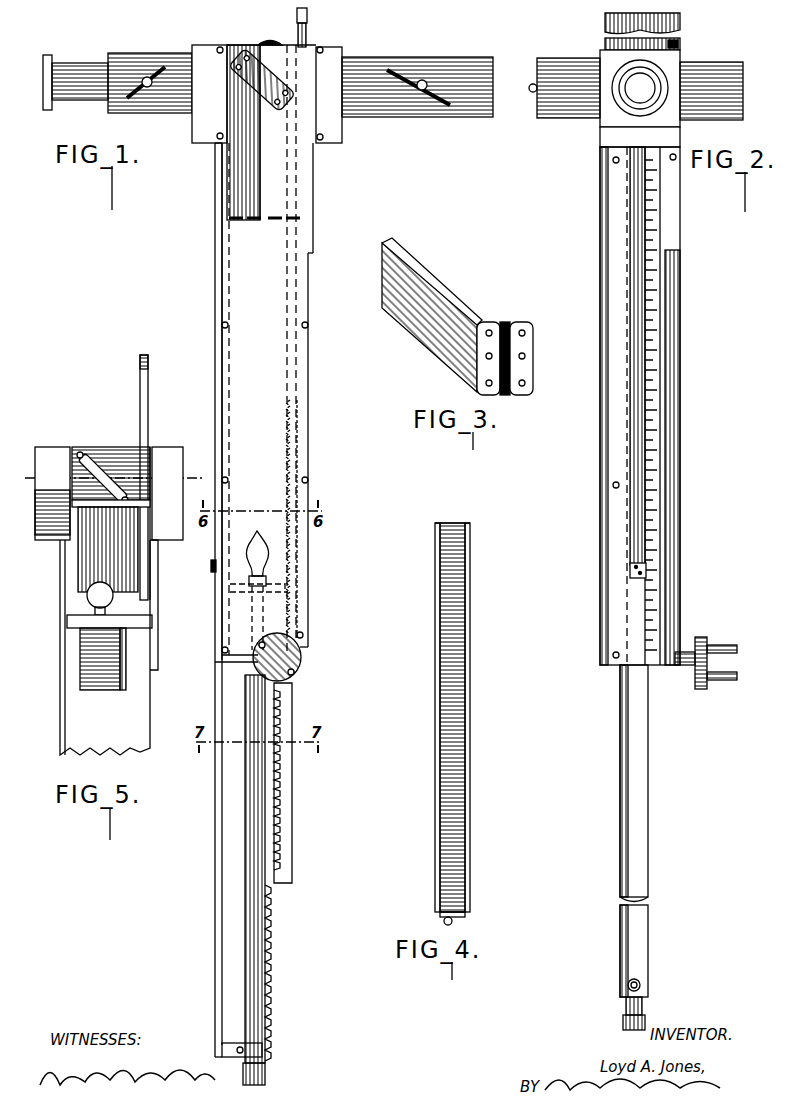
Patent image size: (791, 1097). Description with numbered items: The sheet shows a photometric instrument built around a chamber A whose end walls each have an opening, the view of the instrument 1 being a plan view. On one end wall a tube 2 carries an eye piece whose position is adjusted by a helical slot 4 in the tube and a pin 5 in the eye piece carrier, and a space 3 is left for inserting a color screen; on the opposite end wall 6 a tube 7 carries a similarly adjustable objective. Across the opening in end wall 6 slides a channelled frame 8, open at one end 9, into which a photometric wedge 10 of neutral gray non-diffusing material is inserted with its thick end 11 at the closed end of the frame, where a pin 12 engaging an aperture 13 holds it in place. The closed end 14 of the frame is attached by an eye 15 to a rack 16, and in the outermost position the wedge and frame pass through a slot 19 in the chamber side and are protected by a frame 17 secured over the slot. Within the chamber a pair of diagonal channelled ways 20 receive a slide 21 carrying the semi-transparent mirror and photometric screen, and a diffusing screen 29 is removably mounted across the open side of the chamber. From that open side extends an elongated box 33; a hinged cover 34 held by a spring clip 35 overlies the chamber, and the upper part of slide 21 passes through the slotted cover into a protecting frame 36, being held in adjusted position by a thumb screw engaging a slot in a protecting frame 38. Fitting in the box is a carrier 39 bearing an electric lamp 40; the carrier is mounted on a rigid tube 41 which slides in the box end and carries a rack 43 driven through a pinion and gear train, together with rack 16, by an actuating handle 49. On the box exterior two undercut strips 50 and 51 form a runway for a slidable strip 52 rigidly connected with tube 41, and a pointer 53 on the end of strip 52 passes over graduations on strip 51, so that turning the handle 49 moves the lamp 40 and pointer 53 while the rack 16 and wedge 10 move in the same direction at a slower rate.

In FIG. 2, the housing 1 is at (612, 62).
In FIG. 1, the tube 2 is at (116, 62).
In FIG. 1, the space for color screen 3 is at (196, 45).
In FIG. 1, the helical slot 4 is at (157, 72).
In FIG. 1, the pin 5 is at (147, 88).
In FIG. 1, the end wall 6 is at (342, 48).
In FIG. 1, the tube 7 is at (414, 62).
In FIG. 4, the channelled frame 8 is at (436, 710).
In FIG. 5, the channelled frame 8 is at (148, 437).
In FIG. 4, the open end of frame 9 is at (468, 530).
In FIG. 1, the photometric wedge 10 is at (300, 78).
In FIG. 4, the photometric wedge 10 is at (452, 693).
In FIG. 4, the thick end of wedge 11 is at (466, 905).
In FIG. 4, the pin 12 is at (445, 525).
In FIG. 5, the aperture 13 is at (148, 358).
In FIG. 4, the closed end of frame 14 is at (458, 917).
In FIG. 4, the eye 15 is at (444, 921).
In FIG. 1, the rack 16 is at (298, 443).
In FIG. 1, the protective frame 17 is at (308, 40).
In FIG. 2, the protective frame 17 is at (608, 22).
In FIG. 3, the protective frame 17 is at (490, 310).
In FIG. 5, the slot 19 is at (118, 455).
In FIG. 5, the channelled ways 20 is at (77, 452).
In FIG. 5, the slide 21 is at (92, 455).
In FIG. 5, the diffusing screen 29 is at (90, 507).
In FIG. 1, the elongated box 33 is at (272, 383).
In FIG. 2, the elongated box 33 is at (670, 302).
In FIG. 5, the elongated box 33 is at (138, 698).
In FIG. 1, the hinged cover 34 is at (262, 205).
In FIG. 5, the hinged cover 34 is at (68, 622).
In FIG. 1, the spring clip 35 is at (264, 42).
In FIG. 2, the spring clip 35 is at (680, 42).
In FIG. 1, the protecting frame 36 is at (278, 108).
In FIG. 2, the protecting frame 36 is at (743, 108).
In FIG. 5, the protecting frame 36 is at (82, 653).
In FIG. 2, the protecting frame 38 is at (588, 115).
In FIG. 1, the carrier 39 is at (290, 600).
In FIG. 1, the electric lamp 40 is at (270, 553).
In FIG. 5, the electric lamp 40 is at (108, 592).
In FIG. 1, the rigid tube 41 is at (262, 918).
In FIG. 1, the rack 43 is at (272, 988).
In FIG. 1, the actuating handle 49 is at (301, 658).
In FIG. 2, the actuating handle 49 is at (708, 645).
In FIG. 2, the undercut strip 50 is at (612, 588).
In FIG. 2, the undercut strip 51 is at (662, 604).
In FIG. 1, the slidable strip 52 is at (215, 866).
In FIG. 2, the slidable strip 52 is at (640, 853).
In FIG. 1, the pointer 53 is at (211, 565).
In FIG. 2, the pointer 53 is at (648, 572).
In FIG. 1, the chamber A is at (246, 55).
In FIG. 2, the chamber A is at (680, 60).
In FIG. 5, the chamber A is at (75, 468).